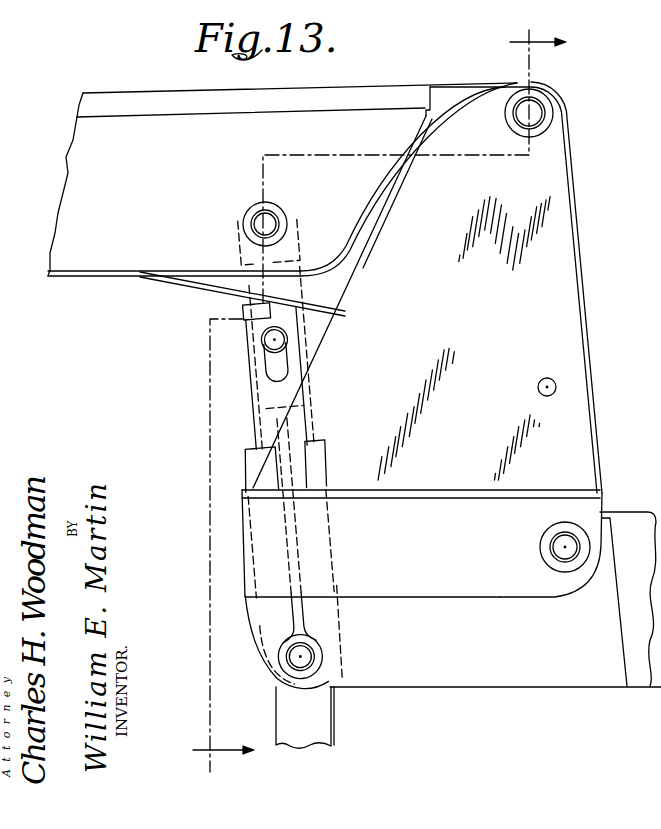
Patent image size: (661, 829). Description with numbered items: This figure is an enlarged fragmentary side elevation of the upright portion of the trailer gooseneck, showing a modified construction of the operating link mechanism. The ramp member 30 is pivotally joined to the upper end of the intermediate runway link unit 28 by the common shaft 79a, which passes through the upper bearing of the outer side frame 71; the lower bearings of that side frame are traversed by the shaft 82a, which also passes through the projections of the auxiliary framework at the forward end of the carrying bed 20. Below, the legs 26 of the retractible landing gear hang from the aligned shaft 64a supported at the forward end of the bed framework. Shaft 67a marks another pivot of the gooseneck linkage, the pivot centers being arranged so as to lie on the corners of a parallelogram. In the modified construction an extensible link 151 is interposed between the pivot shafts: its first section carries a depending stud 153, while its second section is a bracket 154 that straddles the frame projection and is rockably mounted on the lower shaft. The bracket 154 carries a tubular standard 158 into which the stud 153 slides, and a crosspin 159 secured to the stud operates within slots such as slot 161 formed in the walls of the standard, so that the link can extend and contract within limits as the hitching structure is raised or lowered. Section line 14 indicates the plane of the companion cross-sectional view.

The section line 14- 14 is at (538, 30).
The carrying bed 20 is at (649, 509).
The legs 26 is at (337, 722).
The intermediate runway link unit 28 is at (588, 310).
The loading ramp member 30 is at (187, 89).
The shaft 64a is at (306, 657).
The shaft 67a is at (258, 218).
The outer side frame 71 is at (480, 320).
The shaft 79a is at (543, 107).
The shaft 82a is at (567, 556).
The extensible link 151 is at (251, 433).
The stud 153 is at (234, 291).
The bracket 154 is at (250, 530).
The tubular standard 158 is at (246, 393).
The crosspin 159 is at (282, 344).
The slot 161 is at (288, 372).